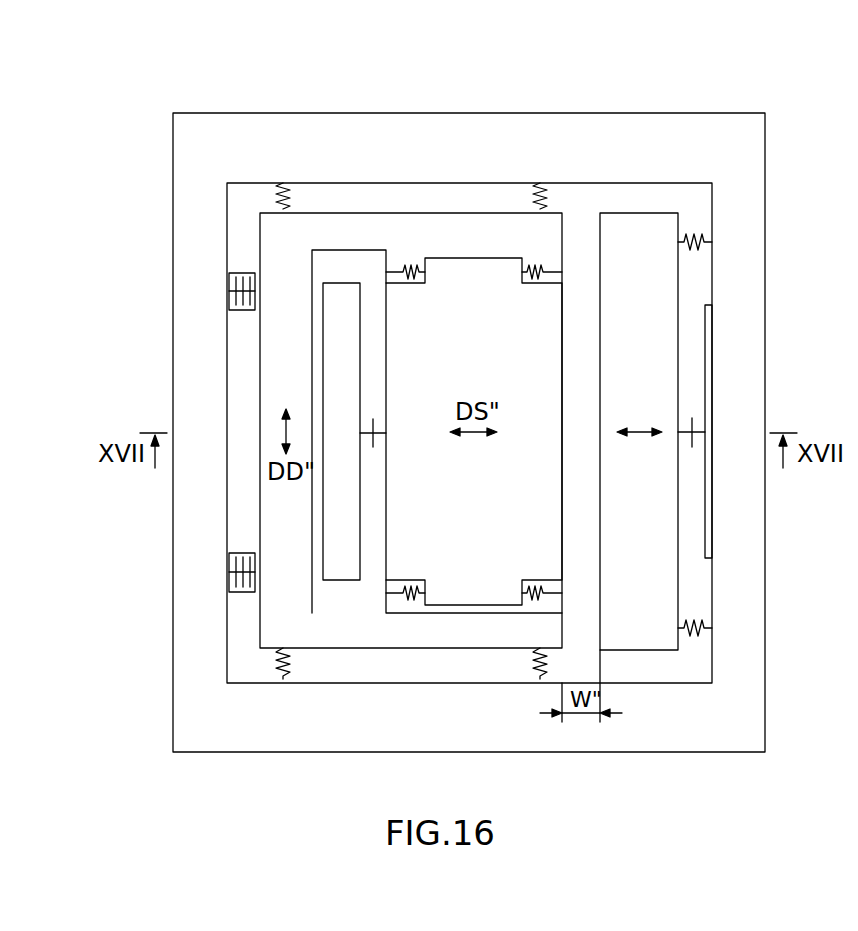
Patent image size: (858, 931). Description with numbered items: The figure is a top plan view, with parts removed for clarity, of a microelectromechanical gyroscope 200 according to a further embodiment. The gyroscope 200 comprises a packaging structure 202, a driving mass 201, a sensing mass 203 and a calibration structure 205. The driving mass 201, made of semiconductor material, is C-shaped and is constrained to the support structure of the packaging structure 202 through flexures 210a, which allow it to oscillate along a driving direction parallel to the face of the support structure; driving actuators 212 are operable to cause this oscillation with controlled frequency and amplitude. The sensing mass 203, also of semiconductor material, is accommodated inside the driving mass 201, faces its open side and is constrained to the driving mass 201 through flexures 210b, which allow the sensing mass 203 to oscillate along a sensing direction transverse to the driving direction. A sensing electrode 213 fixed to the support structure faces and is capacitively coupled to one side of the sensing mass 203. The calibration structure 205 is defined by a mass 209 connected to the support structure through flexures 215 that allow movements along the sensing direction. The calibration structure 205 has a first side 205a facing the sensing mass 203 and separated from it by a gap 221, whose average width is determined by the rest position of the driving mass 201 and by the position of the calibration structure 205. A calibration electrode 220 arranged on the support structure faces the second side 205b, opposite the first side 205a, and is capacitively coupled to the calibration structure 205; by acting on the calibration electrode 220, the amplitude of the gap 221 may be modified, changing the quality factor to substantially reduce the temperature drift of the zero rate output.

The microelectromechanical gyroscope 200 is at (479, 410).
The driving mass 201 is at (329, 635).
The packaging structure 202 is at (388, 104).
The sensing mass 203 is at (495, 518).
The calibration structure 205 is at (653, 625).
The first side of the calibration structure 205a is at (588, 235).
The second side of the calibration structure 205b is at (692, 576).
The mass 209 is at (665, 223).
The flexures 210a is at (283, 183).
The flexures 210b is at (535, 262).
The driving actuators 212 is at (229, 293).
The sensing electrode 213 is at (328, 383).
The flexures 215 is at (712, 232).
The calibration electrode 220 is at (707, 388).
The gap 221 is at (574, 262).